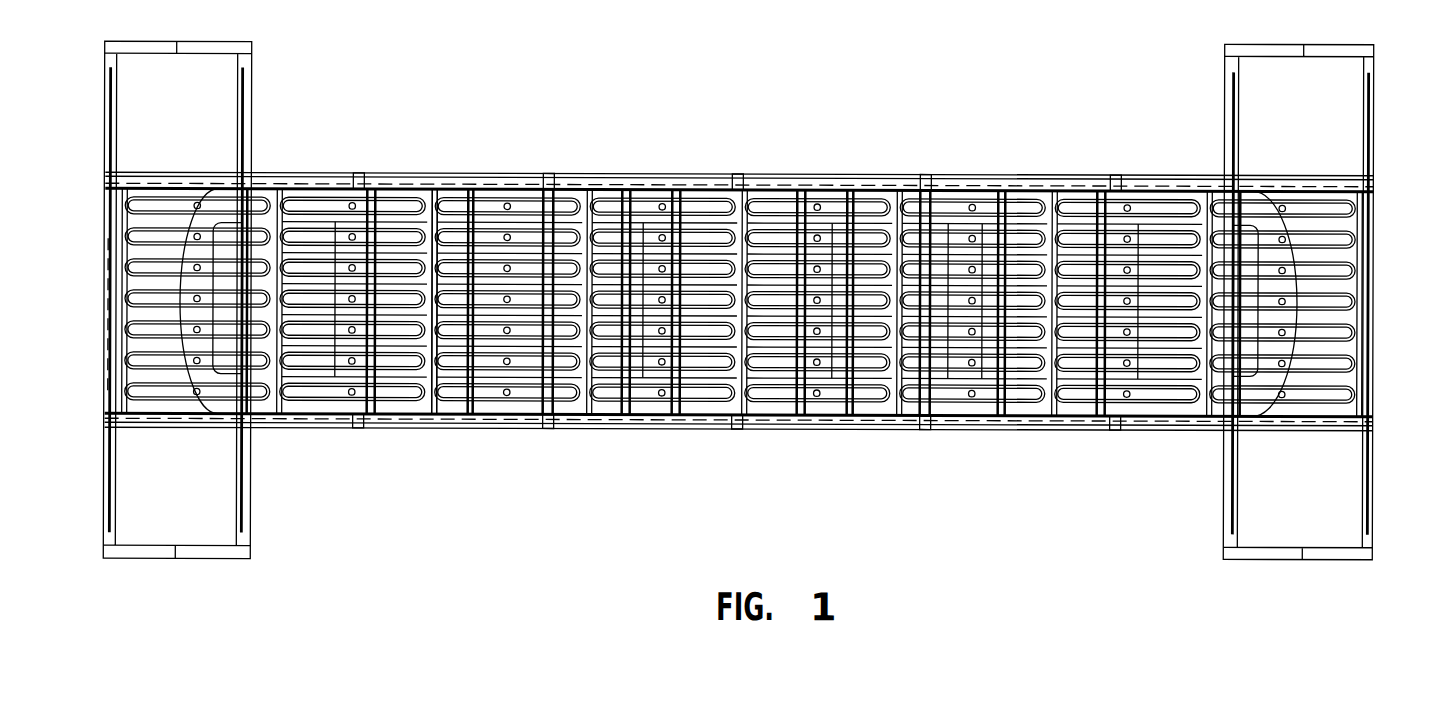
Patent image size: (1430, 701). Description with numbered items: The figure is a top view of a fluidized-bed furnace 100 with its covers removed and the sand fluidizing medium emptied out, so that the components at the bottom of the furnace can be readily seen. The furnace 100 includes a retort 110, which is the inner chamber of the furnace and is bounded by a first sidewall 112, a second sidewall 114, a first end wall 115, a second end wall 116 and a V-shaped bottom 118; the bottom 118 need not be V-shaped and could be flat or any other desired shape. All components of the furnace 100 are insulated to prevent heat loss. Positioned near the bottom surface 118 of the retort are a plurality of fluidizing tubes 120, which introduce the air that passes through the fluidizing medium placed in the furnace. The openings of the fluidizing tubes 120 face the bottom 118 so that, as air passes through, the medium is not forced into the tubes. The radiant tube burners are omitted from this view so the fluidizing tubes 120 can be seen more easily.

The fluidized-bed furnace 100 is at (737, 301).
The retort 110 is at (690, 191).
The first sidewall 112 is at (797, 178).
The second sidewall 114 is at (797, 430).
The first end wall 115 is at (152, 300).
The second end wall 116 is at (1322, 302).
The V-shaped bottom 118 is at (585, 190).
The fluidizing tubes 120 is at (424, 190).